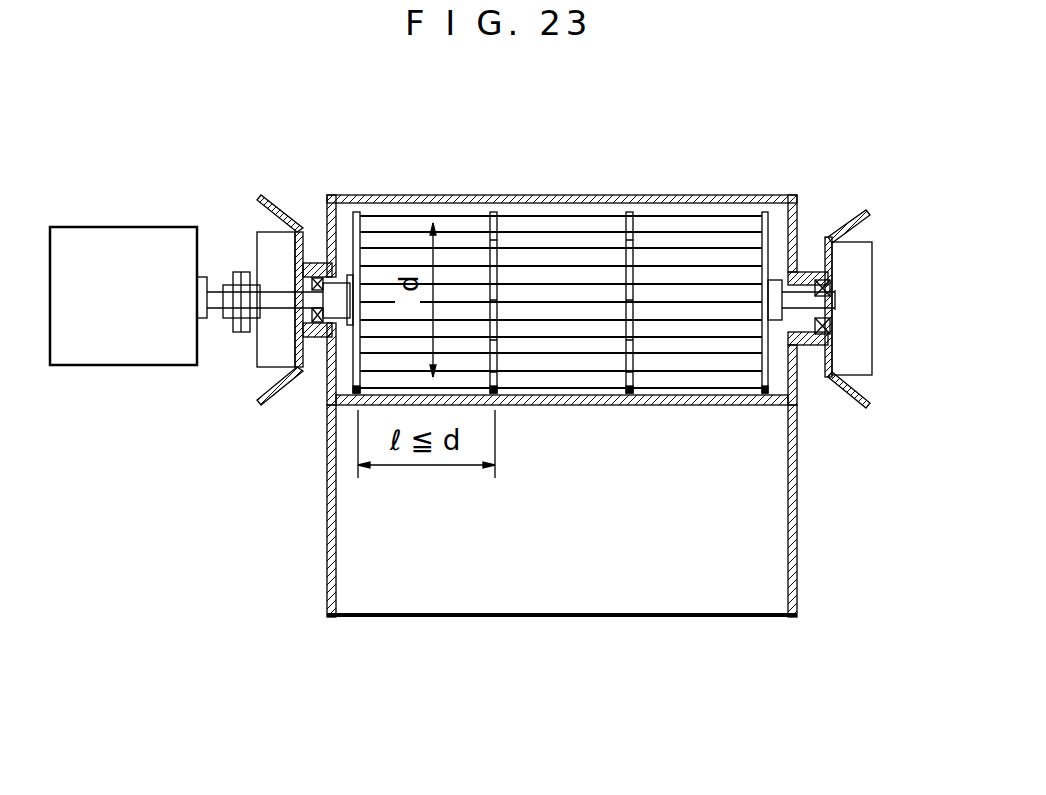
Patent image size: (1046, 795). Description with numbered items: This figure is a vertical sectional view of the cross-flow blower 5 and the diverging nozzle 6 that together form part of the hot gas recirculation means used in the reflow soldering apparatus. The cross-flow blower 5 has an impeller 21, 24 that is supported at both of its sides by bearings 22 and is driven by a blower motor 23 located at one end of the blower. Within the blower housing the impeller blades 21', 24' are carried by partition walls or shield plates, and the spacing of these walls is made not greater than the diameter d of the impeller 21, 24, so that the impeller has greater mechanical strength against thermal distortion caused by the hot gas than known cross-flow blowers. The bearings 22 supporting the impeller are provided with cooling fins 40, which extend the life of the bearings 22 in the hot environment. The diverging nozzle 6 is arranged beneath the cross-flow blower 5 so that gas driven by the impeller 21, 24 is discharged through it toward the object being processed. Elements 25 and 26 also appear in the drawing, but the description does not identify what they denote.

The cross-flow blower 5 is at (578, 197).
The diverging nozzle 6 is at (797, 552).
The impeller 21 is at (583, 246).
The impeller blade 21' is at (615, 249).
The bearing 22 is at (832, 290).
The blower motor 23 is at (481, 246).
The impeller 24 is at (564, 231).
The impeller blade 24' is at (683, 231).
The bearing plate 25 is at (609, 292).
The motor 26 is at (145, 237).
The cooling fin 40 is at (276, 200).